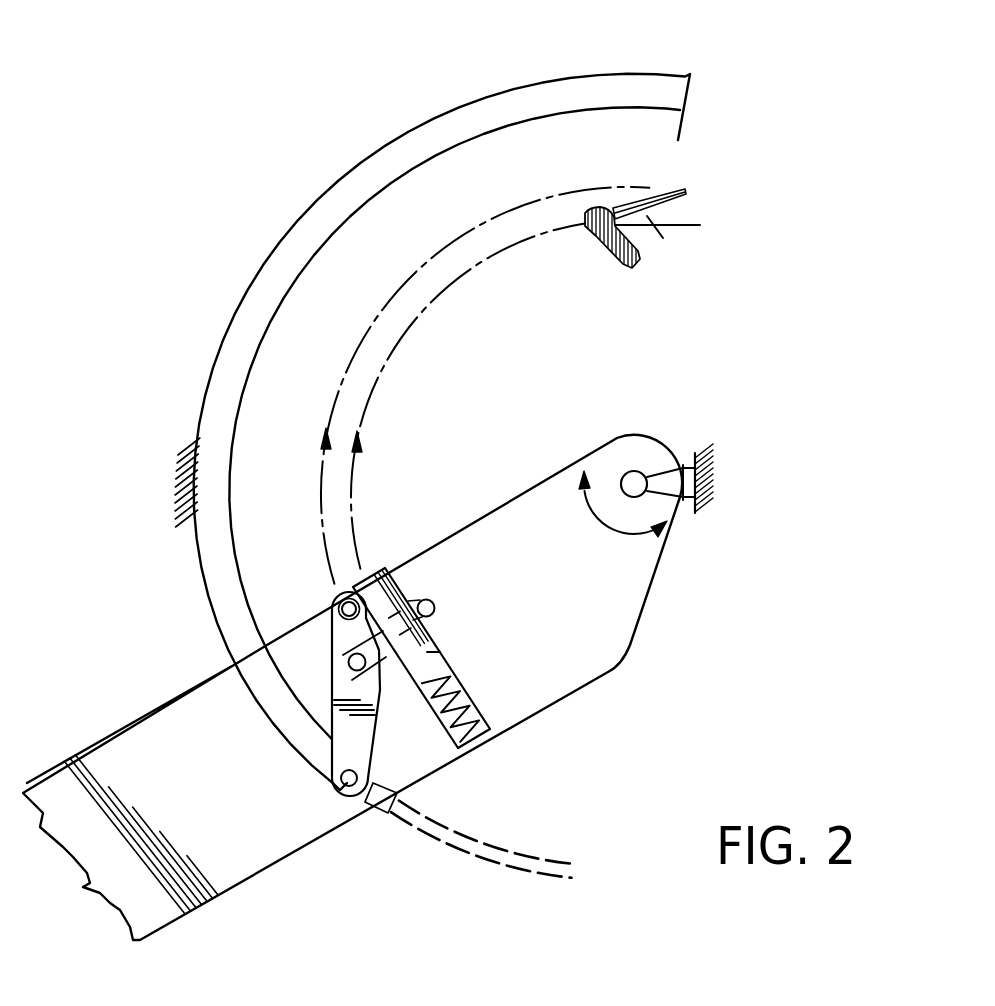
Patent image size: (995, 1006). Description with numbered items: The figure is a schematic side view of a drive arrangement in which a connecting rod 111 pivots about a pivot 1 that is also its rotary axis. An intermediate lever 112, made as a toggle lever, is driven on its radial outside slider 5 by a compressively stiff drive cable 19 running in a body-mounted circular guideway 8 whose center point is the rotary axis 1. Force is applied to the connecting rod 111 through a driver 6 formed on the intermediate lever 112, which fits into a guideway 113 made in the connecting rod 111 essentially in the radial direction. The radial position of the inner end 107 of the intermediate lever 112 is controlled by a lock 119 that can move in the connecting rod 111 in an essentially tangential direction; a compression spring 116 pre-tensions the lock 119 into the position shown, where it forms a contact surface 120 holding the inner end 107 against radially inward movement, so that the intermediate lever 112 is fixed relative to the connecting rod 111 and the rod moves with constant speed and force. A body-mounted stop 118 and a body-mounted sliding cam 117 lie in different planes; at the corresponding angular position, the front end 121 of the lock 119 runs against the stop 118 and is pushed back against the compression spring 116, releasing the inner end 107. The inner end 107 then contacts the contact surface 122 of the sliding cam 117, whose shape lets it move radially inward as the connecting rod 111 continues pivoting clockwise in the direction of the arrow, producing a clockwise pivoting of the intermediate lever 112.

The pivot 1 is at (637, 470).
The radial outside slider 5 is at (348, 787).
The driver 6 is at (330, 674).
The body-mounted circular guideway 8 is at (288, 256).
The drive cable 19 is at (504, 862).
The inner end 107 is at (352, 588).
The connecting rod 111 is at (133, 753).
The intermediate lever 112 is at (362, 735).
The guideway 113 is at (430, 606).
The compression spring 116 is at (482, 745).
The sliding cam 117 is at (606, 248).
The stop 118 is at (671, 214).
The lock 119 is at (440, 652).
The contact surface 120 is at (332, 628).
The front end 121 is at (370, 570).
The contact surface 122 is at (641, 243).